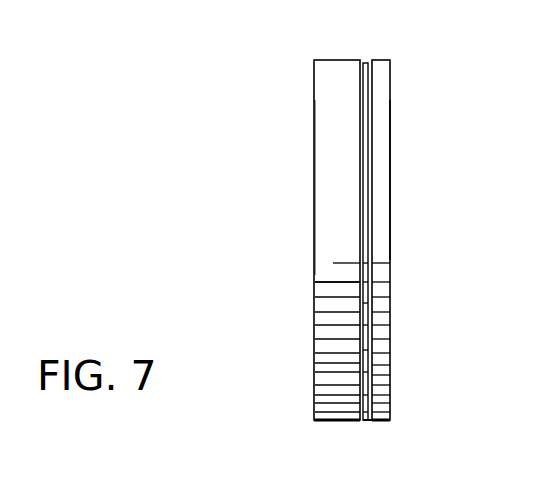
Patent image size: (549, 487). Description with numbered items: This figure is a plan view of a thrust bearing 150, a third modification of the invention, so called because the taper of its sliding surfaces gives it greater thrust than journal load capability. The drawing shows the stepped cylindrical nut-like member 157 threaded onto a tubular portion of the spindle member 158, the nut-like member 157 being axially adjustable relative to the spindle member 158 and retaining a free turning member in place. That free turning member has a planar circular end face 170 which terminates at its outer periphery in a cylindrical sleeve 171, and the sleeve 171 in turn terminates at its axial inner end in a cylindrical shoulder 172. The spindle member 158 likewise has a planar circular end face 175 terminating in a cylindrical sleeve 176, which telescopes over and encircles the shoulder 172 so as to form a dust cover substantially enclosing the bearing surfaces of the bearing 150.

The thrust bearing 150 is at (317, 50).
The nut-like member 157 is at (325, 237).
The spindle member 158 is at (387, 241).
The planar circular end face 170 is at (320, 275).
The cylindrical sleeve 171 is at (366, 22).
The cylindrical shoulder 172 is at (368, 421).
The planar circular end face 175 is at (393, 284).
The cylindrical sleeve 176 is at (383, 58).